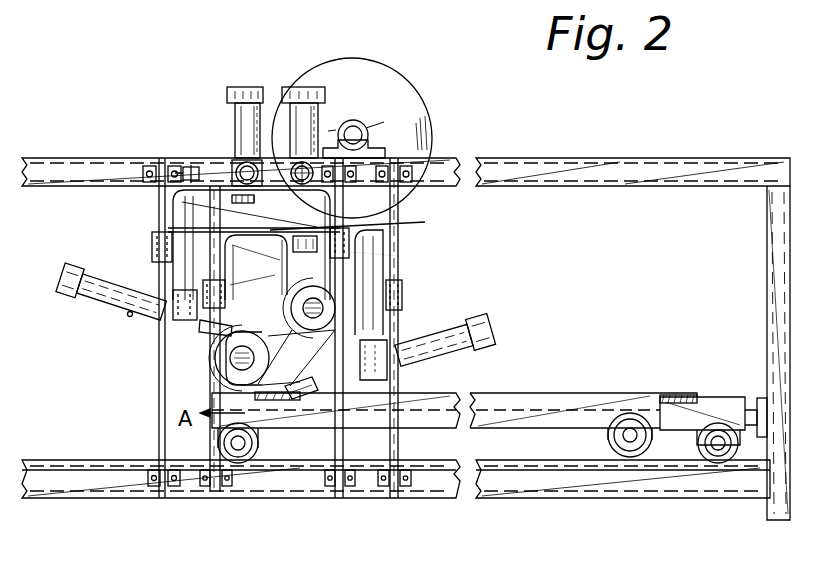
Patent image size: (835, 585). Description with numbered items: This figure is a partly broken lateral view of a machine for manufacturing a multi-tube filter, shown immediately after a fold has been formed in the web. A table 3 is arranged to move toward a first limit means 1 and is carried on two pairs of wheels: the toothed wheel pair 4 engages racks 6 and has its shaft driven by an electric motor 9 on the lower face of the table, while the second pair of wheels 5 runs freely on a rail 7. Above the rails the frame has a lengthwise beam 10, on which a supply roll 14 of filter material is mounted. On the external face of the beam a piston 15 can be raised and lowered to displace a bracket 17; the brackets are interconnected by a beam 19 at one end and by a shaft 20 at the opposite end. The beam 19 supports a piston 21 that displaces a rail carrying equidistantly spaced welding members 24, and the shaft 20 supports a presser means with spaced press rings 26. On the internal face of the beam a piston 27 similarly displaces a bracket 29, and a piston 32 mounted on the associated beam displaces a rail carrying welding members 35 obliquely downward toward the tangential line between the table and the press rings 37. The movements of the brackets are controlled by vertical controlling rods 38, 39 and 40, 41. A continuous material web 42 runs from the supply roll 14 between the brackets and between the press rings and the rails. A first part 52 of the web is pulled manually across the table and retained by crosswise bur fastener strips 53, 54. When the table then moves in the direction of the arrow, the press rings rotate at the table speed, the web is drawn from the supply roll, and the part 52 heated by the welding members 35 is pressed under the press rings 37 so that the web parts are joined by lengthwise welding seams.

The first limit means 1 is at (762, 398).
The table 3 is at (721, 396).
The wheel pair 4 is at (713, 458).
The second pair of wheels 5 is at (253, 462).
The racks 6 is at (450, 465).
The rail 7 is at (127, 487).
The electric motor 9 is at (630, 445).
The lengthwise beam 10 is at (118, 175).
The supply roll 14 is at (412, 92).
The piston 15 is at (228, 92).
The bracket 17 is at (215, 196).
The beam 19 is at (126, 316).
The shaft 20 is at (314, 300).
The piston 21 is at (105, 275).
The welding members 24 is at (175, 290).
The press rings 26 is at (401, 300).
The piston 27 is at (288, 88).
The bracket 29 is at (350, 244).
The piston 32 is at (500, 318).
The welding members 35 is at (303, 381).
The press rings 37 is at (232, 379).
The vertical controlling rod 38 is at (159, 409).
The vertical controlling rod 39 is at (343, 222).
The vertical controlling rod 40 is at (223, 353).
The vertical controlling rod 41 is at (350, 252).
The material web 42 is at (230, 329).
The first part of material web 52 is at (563, 392).
The bur fastener strip 53 is at (272, 400).
The bur fastener strip 54 is at (681, 394).